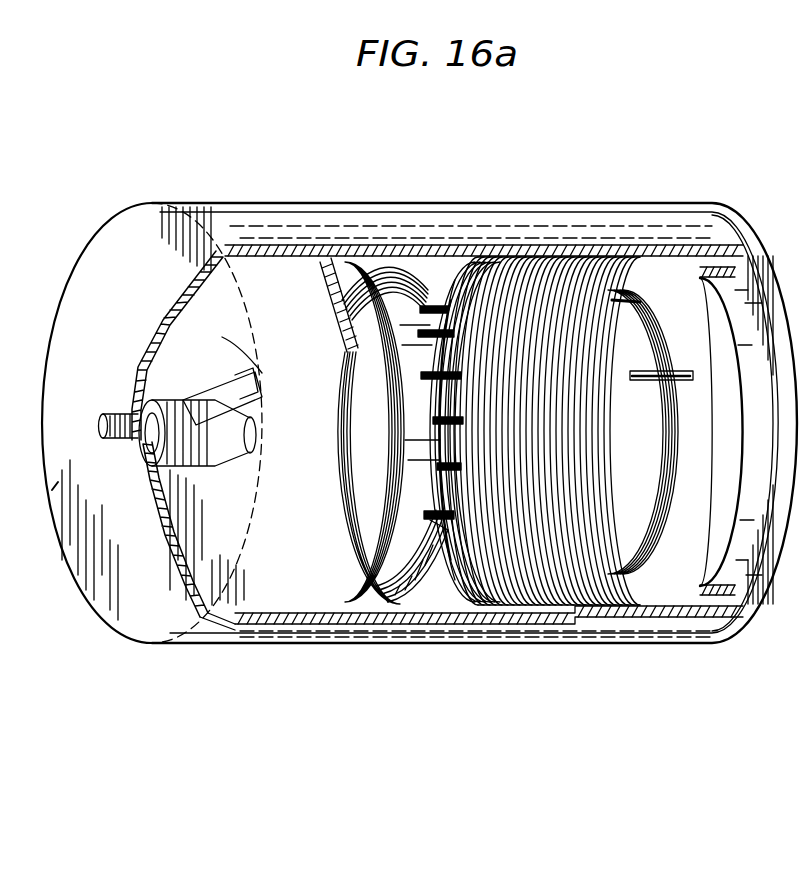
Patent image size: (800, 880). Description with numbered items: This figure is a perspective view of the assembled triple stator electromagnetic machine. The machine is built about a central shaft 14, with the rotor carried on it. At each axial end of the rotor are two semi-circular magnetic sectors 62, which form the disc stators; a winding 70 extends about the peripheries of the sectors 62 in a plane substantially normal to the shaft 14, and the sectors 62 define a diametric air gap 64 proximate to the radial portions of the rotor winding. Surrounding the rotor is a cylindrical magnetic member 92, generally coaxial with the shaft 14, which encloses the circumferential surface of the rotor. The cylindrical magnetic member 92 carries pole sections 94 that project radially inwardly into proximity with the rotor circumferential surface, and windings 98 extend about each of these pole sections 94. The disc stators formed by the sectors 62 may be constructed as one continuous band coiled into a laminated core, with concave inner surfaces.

The shaft 14 is at (132, 440).
The semi-circular magnetic sectors 62 is at (403, 357).
The diametric air gap 64 is at (690, 372).
The winding 70 is at (345, 553).
The cylindrical magnetic member 92 is at (445, 592).
The pole section 94 is at (428, 292).
The windings 98 is at (385, 265).